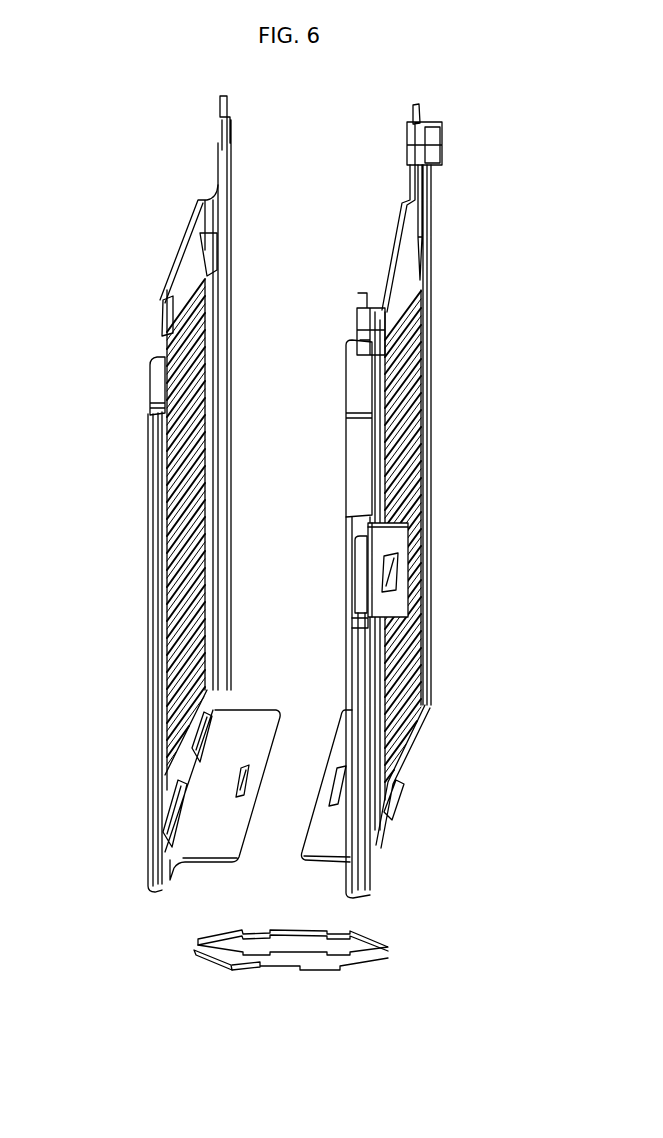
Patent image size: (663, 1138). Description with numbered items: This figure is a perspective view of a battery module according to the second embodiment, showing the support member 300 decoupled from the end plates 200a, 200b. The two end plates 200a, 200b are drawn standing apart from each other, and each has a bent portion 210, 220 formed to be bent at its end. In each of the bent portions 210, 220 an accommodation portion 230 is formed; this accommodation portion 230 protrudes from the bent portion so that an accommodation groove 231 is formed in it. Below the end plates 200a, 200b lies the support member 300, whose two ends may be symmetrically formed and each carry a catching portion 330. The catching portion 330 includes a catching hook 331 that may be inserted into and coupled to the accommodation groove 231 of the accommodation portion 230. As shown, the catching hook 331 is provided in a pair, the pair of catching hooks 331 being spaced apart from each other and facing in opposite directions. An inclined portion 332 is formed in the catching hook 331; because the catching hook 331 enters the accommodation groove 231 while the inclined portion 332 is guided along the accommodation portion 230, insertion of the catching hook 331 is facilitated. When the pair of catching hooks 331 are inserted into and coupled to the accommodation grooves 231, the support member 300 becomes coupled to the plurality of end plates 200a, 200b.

The end plate 200a is at (148, 515).
The end plate 200b is at (405, 481).
The bent portion 210 is at (212, 853).
The bent portion 220 is at (335, 857).
The accommodation portion 230 is at (246, 763).
The accommodation groove 231 is at (250, 780).
The support member 300 is at (314, 1024).
The catching portion 330 is at (190, 964).
The catching hook 331 is at (228, 962).
The inclined portion 332 is at (215, 962).